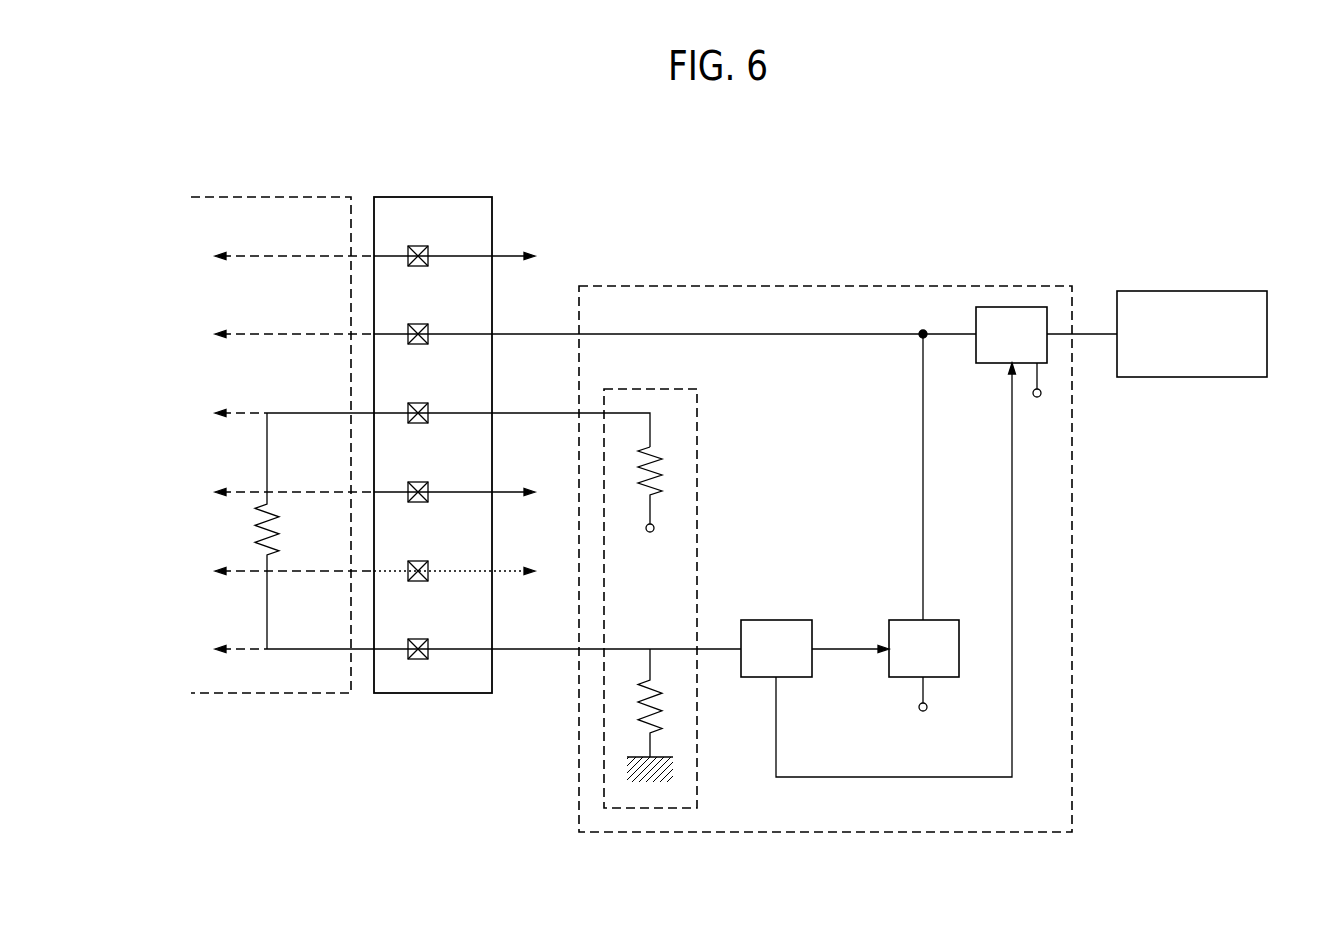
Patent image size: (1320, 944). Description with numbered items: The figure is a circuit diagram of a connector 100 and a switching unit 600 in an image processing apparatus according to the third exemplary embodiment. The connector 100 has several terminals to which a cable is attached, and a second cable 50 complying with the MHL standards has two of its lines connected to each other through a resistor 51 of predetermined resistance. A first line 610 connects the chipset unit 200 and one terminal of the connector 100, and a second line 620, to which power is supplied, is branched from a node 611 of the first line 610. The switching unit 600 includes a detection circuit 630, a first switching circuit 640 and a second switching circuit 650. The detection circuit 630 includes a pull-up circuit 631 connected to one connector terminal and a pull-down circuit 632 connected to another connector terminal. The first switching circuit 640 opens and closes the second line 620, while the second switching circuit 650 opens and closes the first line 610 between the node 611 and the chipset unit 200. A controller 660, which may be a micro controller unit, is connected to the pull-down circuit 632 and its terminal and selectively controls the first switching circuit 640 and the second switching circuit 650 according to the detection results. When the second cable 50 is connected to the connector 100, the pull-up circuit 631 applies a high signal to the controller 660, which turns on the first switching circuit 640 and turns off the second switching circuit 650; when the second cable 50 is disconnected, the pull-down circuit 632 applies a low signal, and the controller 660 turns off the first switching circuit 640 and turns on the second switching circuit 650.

The second cable 50 is at (263, 197).
The resistor 51 is at (232, 535).
The connector 100 is at (499, 180).
The chipset unit 200 is at (1189, 291).
The switching unit 600 is at (641, 286).
The first line 610 is at (739, 334).
The node 611 is at (921, 330).
The second line 620 is at (924, 553).
The detection circuit 630 is at (630, 598).
The pull-up circuit 631 is at (675, 465).
The pull-down circuit 632 is at (626, 719).
The first switching circuit 640 is at (959, 649).
The second switching circuit 650 is at (1010, 307).
The controller 660 is at (775, 620).